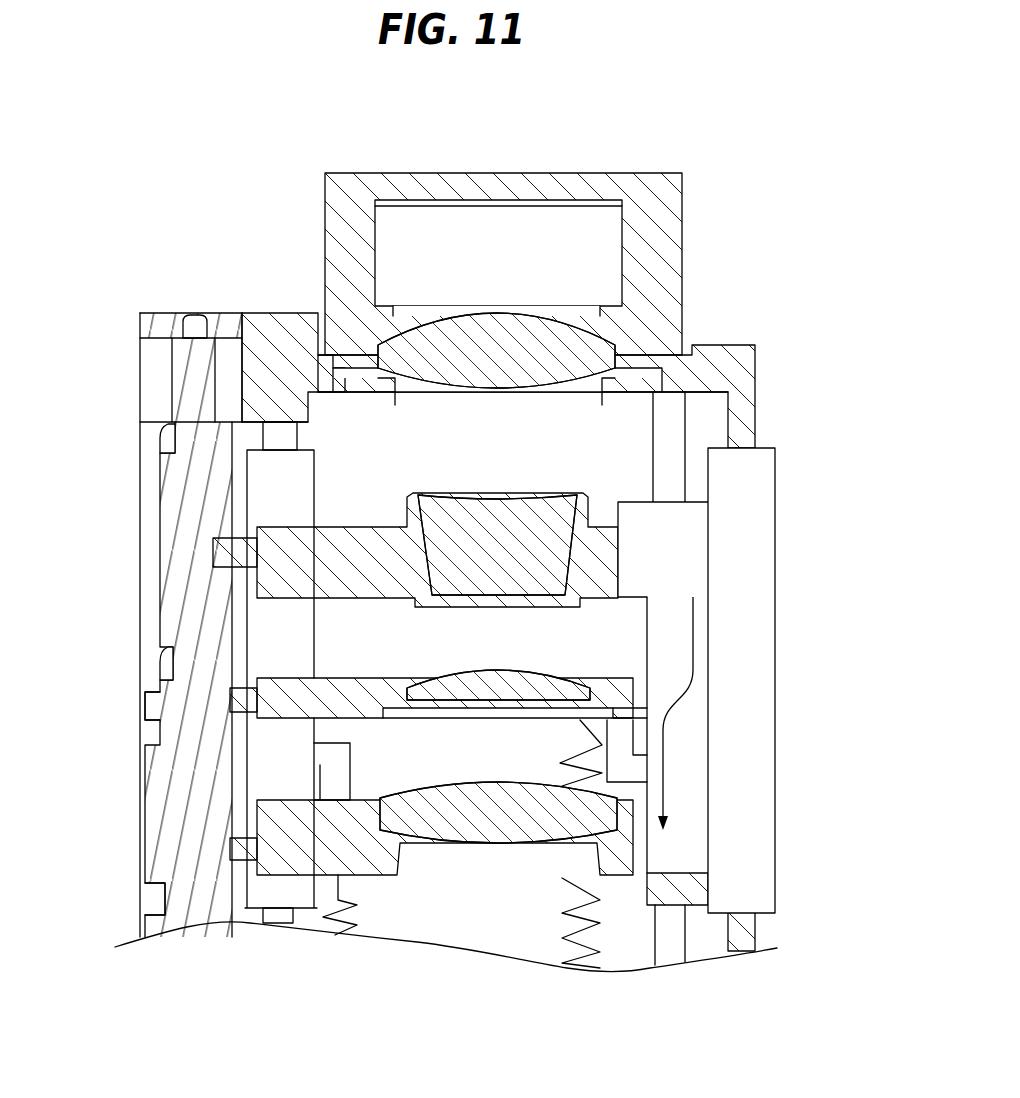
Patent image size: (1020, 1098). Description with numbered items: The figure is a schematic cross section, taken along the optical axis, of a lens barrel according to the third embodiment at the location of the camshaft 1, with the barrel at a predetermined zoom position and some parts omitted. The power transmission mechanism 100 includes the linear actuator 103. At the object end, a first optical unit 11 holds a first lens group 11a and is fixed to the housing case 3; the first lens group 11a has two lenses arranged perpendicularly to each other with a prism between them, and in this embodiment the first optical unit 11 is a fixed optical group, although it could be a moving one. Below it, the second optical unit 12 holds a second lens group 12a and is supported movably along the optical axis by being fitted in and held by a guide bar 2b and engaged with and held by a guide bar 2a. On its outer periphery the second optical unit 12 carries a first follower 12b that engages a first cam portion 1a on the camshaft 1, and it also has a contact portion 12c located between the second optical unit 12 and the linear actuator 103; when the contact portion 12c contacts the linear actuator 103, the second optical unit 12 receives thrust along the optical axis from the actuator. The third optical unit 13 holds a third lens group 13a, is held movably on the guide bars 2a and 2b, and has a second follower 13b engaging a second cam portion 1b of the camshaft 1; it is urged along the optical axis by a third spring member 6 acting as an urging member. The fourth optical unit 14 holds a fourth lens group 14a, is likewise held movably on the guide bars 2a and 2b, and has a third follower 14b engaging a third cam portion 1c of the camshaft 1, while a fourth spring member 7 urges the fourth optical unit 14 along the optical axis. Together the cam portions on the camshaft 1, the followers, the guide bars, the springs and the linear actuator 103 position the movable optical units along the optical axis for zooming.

The camshaft 1 is at (187, 355).
The first cam portion 1a is at (228, 570).
The second cam portion 1b is at (165, 748).
The third cam portion 1c is at (162, 900).
The guide bar 2a is at (675, 417).
The guide bar 2b is at (282, 432).
The housing case 3 is at (258, 337).
The third spring member 6 is at (590, 913).
The fourth spring member 7 is at (345, 913).
The first optical unit 11 is at (622, 190).
The first lens group 11a is at (512, 325).
The second optical unit 12 is at (330, 537).
The second lens group 12a is at (535, 540).
The first follower 12b is at (250, 542).
The contact portion 12c is at (695, 527).
The third optical unit 13 is at (612, 680).
The third lens group 13a is at (463, 690).
The second follower 13b is at (235, 700).
The fourth optical unit 14 is at (620, 850).
The fourth lens group 14a is at (517, 837).
The third follower 14b is at (235, 850).
The power transmission mechanism 100 is at (789, 347).
The linear actuator 103 is at (765, 600).